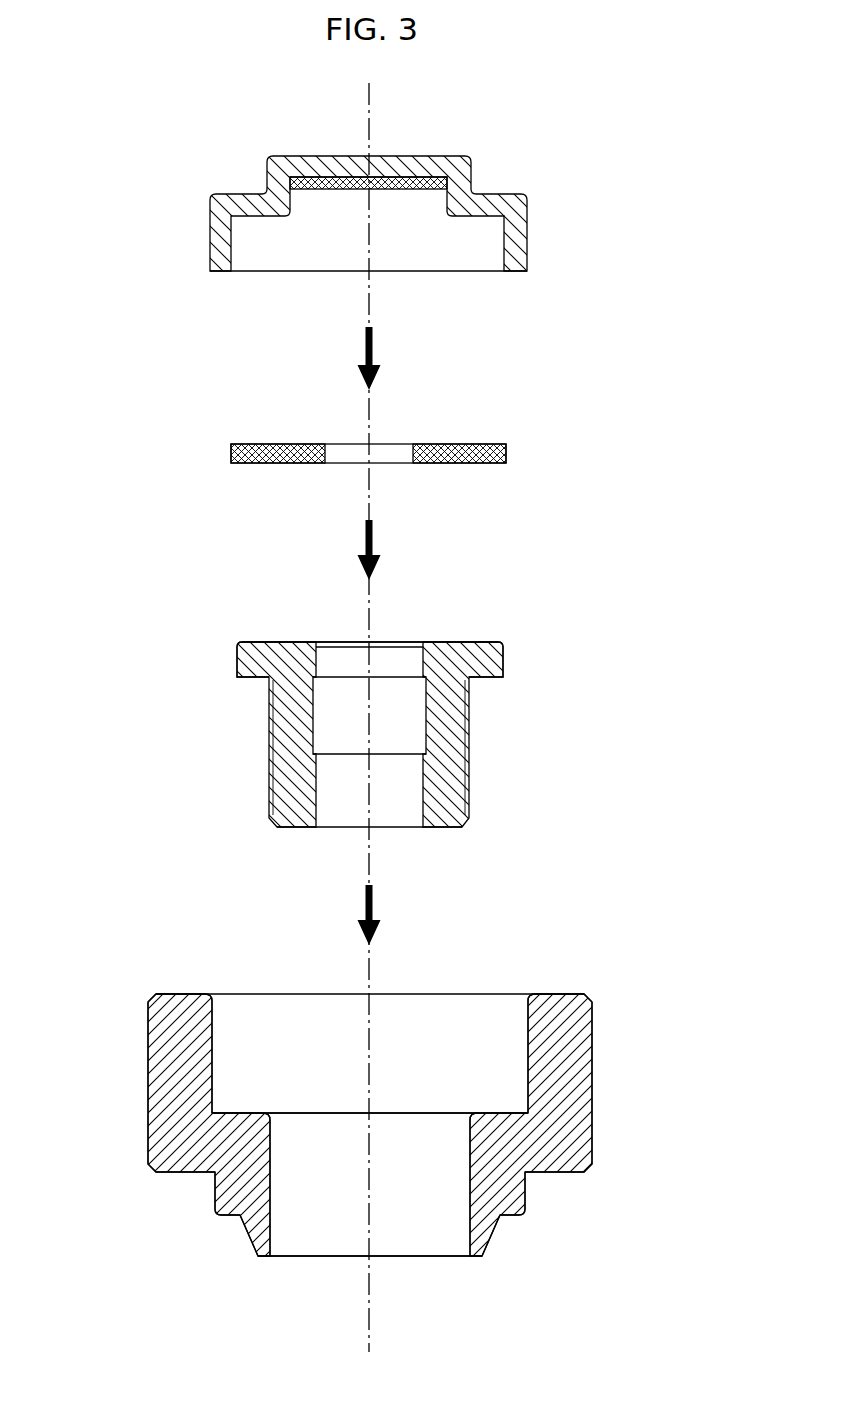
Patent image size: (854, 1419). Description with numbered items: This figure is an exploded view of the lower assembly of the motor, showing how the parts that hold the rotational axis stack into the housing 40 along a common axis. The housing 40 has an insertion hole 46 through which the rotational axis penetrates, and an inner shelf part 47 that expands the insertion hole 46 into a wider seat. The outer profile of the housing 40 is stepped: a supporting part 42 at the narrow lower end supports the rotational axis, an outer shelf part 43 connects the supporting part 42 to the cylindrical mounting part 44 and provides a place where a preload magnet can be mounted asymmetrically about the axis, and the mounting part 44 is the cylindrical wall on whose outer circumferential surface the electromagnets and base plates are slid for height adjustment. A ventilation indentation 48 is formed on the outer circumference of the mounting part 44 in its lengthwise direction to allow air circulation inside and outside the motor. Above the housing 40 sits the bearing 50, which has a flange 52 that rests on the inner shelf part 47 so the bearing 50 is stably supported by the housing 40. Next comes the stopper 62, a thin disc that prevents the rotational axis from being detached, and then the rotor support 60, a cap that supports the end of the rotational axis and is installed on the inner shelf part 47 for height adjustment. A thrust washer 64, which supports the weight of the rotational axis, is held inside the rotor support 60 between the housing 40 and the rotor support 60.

The housing 40 is at (553, 1037).
The supporting part 42 is at (257, 1247).
The outer shelf part 43 is at (213, 1190).
The cylindrical mounting part 44 is at (163, 1122).
The insertion hole 46 is at (470, 1207).
The inner shelf part 47 is at (497, 1110).
The ventilation indentation 48 is at (592, 1127).
The bearing 50 is at (453, 760).
The flange 52 is at (495, 653).
The rotor support 60 is at (518, 248).
The stopper 62 is at (463, 443).
The thrust washer 64 is at (413, 177).